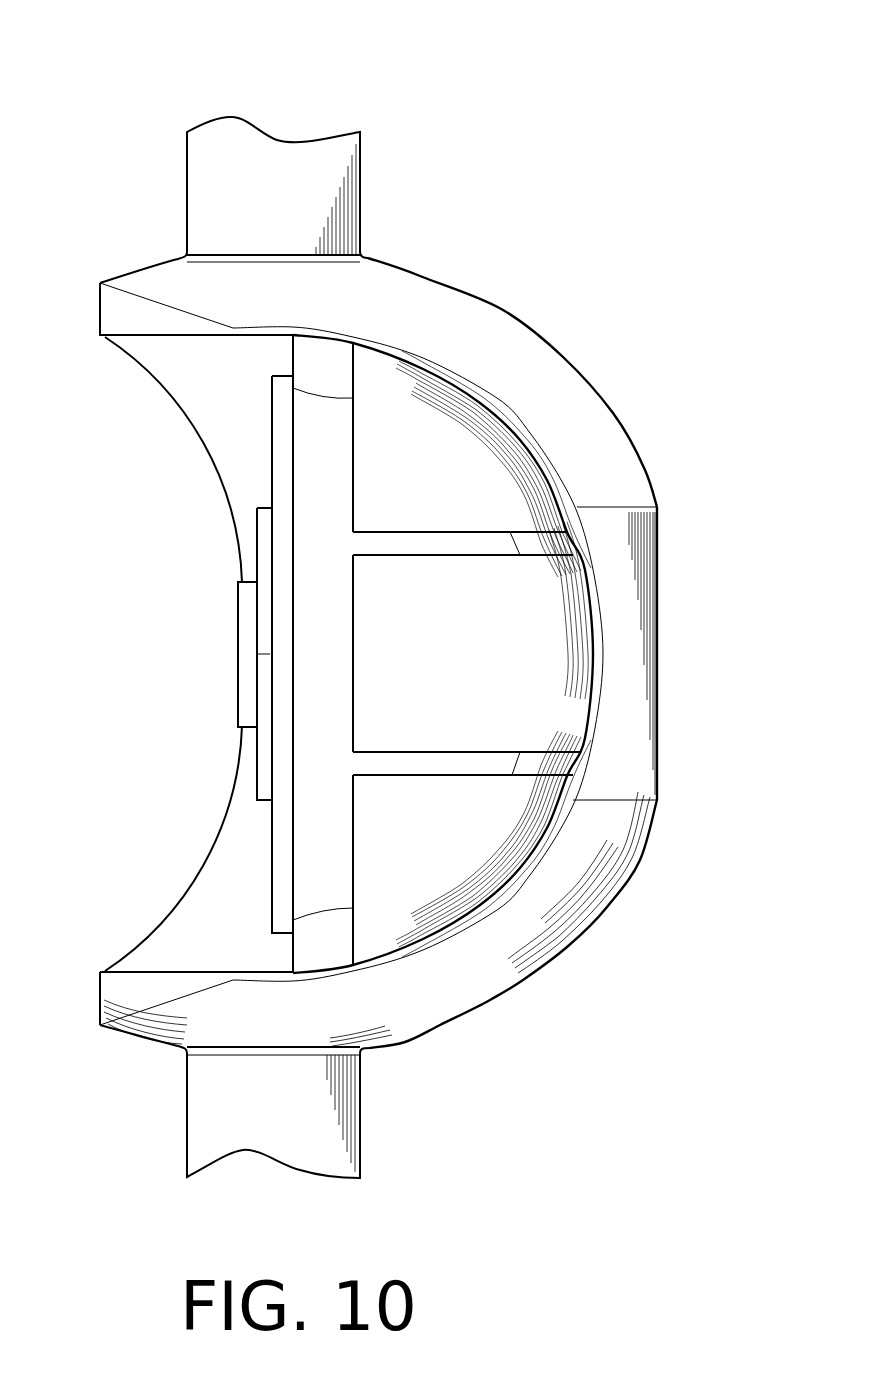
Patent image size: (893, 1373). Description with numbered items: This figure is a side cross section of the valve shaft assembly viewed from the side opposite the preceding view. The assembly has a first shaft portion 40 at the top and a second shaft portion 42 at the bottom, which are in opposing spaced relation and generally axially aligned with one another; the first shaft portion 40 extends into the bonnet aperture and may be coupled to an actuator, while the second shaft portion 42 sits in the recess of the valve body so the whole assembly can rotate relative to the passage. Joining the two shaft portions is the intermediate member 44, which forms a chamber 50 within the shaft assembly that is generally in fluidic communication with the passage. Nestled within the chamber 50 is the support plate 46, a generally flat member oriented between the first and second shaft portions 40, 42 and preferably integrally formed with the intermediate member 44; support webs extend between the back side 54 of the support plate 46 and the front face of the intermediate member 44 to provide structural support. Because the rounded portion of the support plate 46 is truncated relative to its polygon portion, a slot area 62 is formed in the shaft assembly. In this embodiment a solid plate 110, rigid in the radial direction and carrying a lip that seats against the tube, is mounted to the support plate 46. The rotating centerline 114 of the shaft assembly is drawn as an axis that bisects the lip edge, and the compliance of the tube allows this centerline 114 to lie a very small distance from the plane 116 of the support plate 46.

The first shaft portion 40 is at (207, 213).
The second shaft portion 42 is at (217, 1121).
The intermediate member 44 is at (485, 327).
The support plate 46 is at (335, 478).
The chamber 50 is at (533, 608).
The back side 54 is at (355, 662).
The slot area 62 is at (333, 368).
The solid plate 110 is at (283, 687).
The rotating centerline 114 is at (270, 332).
The plane of the support plate 116 is at (318, 348).